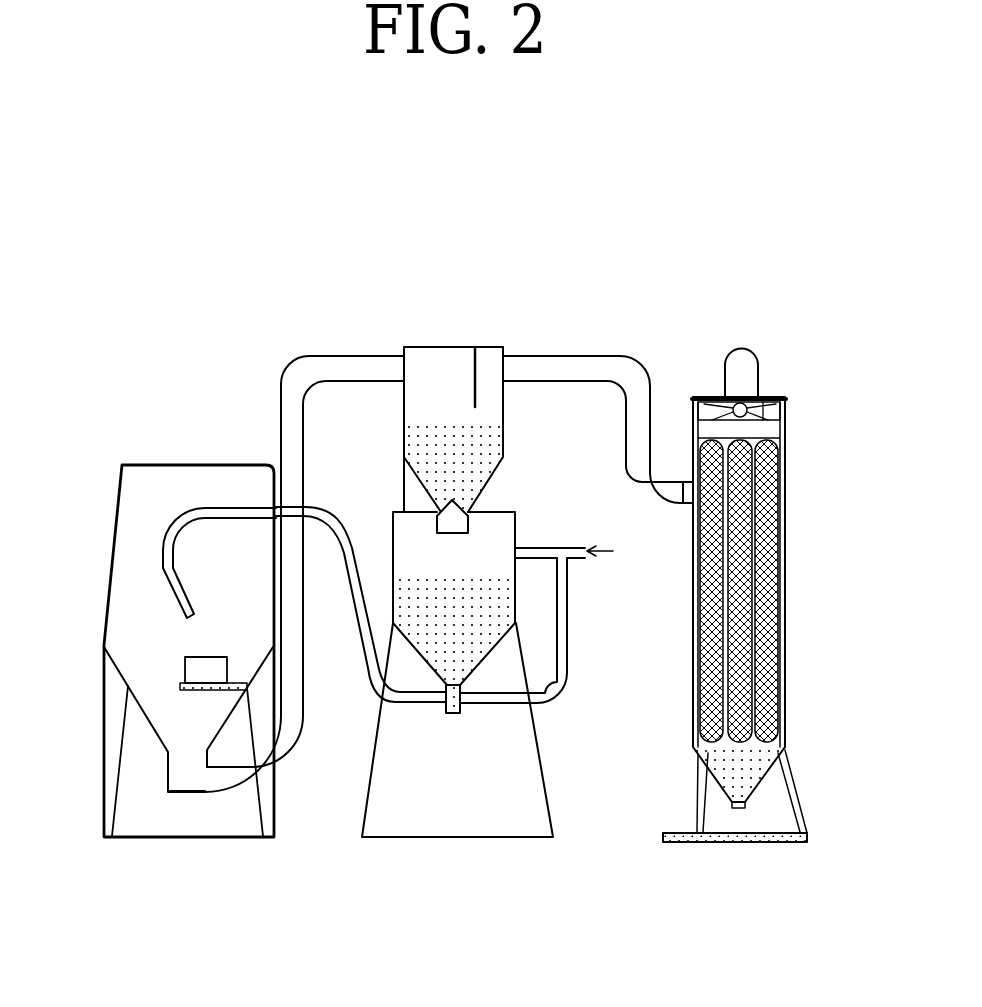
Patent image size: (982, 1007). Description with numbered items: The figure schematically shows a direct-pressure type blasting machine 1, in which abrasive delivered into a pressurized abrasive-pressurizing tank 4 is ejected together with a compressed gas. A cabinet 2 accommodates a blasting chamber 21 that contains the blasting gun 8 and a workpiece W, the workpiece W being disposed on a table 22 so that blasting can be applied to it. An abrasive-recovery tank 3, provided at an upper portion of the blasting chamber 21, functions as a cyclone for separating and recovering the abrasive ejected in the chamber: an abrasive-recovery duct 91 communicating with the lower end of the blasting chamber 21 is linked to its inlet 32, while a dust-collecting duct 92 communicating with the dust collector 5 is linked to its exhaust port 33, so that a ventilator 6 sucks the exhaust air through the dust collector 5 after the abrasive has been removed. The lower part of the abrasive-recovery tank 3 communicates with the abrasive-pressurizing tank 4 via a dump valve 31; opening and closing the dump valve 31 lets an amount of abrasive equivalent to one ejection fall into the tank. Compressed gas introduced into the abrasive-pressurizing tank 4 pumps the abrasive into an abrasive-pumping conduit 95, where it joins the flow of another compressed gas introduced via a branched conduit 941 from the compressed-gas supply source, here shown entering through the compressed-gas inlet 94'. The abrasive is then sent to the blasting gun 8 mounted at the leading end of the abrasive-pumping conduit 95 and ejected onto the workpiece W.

The blasting machine 1 is at (241, 328).
The cabinet 2 is at (119, 505).
The blasting chamber 21 is at (177, 486).
The table 22 is at (200, 691).
The blasting gun 8 is at (177, 597).
The abrasive-recovery tank 3 is at (447, 346).
The dump valve 31 is at (462, 534).
The inlet 32 is at (405, 370).
The exhaust port 33 is at (506, 371).
The abrasive-pressurizing tank 4 is at (407, 537).
The dust collector 5 is at (787, 593).
The ventilator 6 is at (773, 420).
The abrasive-recovery duct 91 is at (305, 446).
The dust-collecting duct 92 is at (571, 384).
The compressed gas supply pipe 94' is at (597, 521).
The branched conduit 941 is at (551, 698).
The abrasive-pumping conduit 95 is at (367, 683).